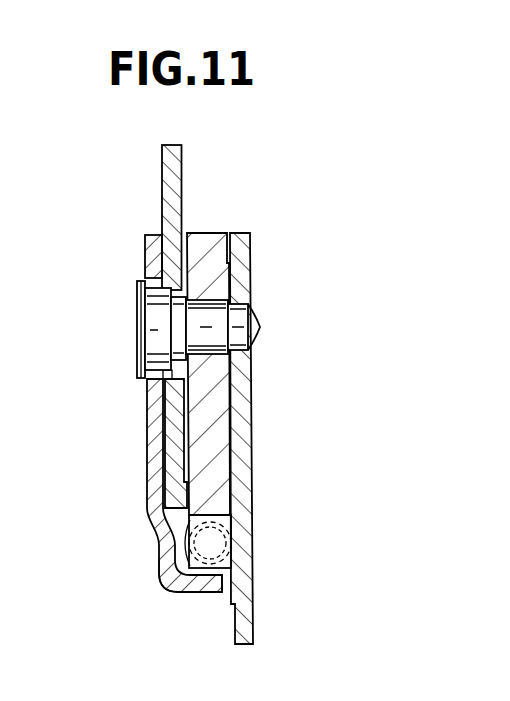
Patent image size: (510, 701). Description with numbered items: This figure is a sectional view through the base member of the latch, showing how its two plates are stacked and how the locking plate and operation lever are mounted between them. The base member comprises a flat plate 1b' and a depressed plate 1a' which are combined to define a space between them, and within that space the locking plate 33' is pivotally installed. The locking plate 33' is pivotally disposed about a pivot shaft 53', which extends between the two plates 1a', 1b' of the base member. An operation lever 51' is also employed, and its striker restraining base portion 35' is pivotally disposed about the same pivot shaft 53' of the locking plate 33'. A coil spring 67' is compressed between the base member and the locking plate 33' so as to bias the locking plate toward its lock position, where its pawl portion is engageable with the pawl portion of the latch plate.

The operation lever 51' is at (208, 213).
The pivot shaft 53' is at (160, 329).
The locking plate 33' is at (255, 374).
The striker restraining base portion 35' is at (126, 439).
The depressed plate 1a' is at (152, 413).
The flat plate 1b' is at (280, 438).
The coil spring 67' is at (161, 597).